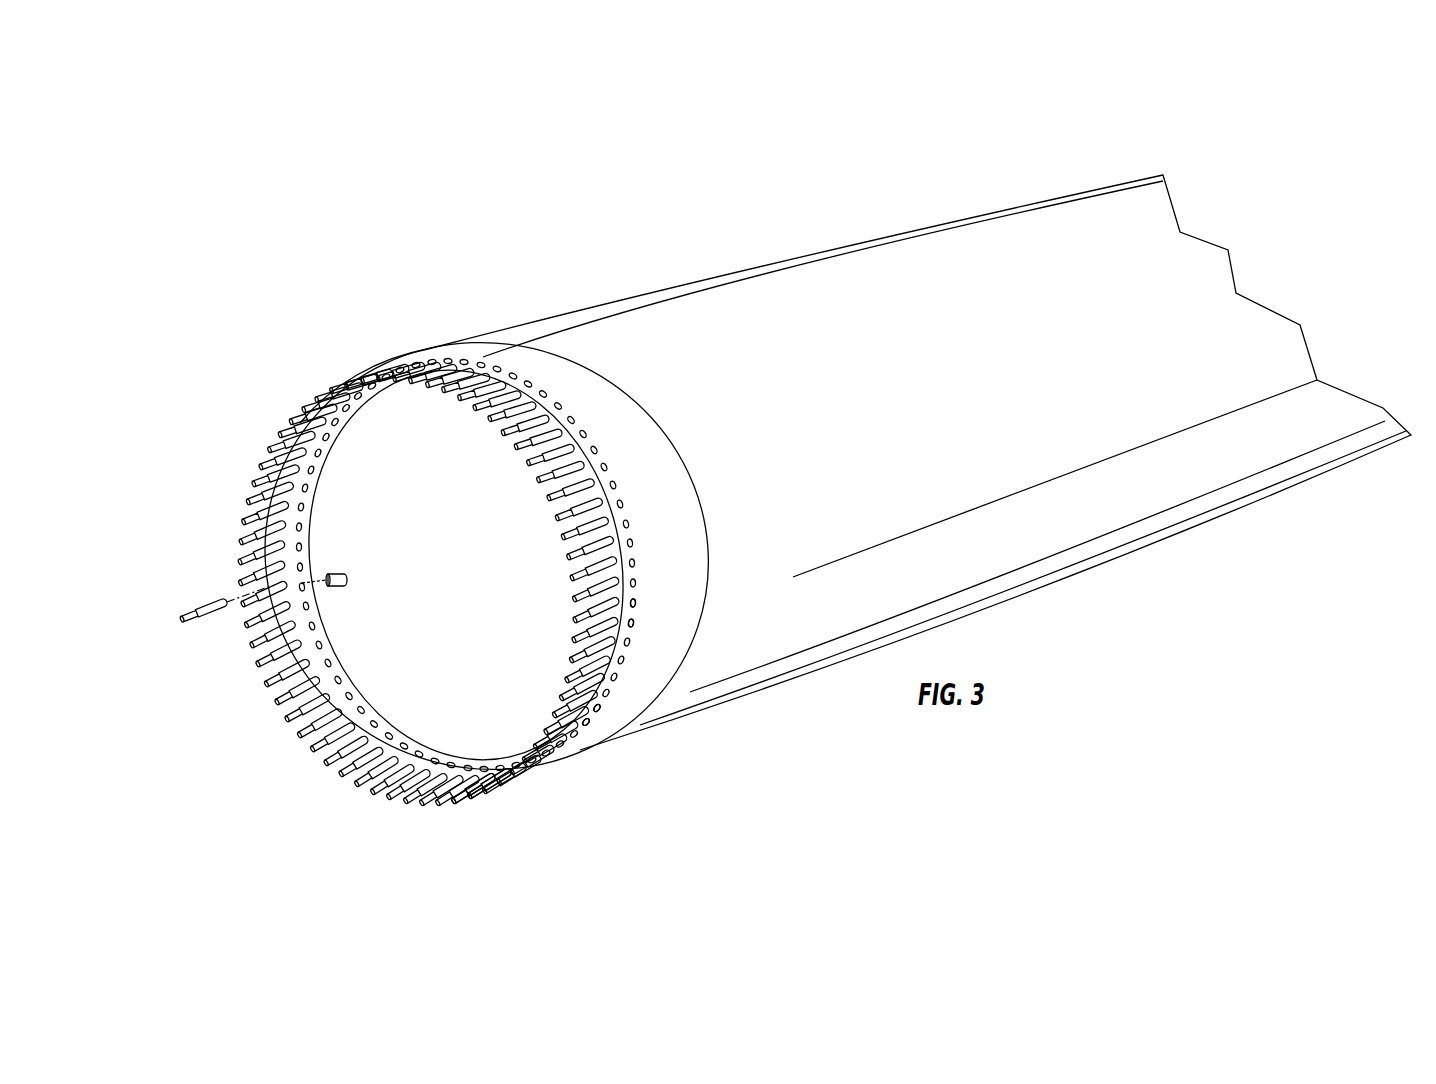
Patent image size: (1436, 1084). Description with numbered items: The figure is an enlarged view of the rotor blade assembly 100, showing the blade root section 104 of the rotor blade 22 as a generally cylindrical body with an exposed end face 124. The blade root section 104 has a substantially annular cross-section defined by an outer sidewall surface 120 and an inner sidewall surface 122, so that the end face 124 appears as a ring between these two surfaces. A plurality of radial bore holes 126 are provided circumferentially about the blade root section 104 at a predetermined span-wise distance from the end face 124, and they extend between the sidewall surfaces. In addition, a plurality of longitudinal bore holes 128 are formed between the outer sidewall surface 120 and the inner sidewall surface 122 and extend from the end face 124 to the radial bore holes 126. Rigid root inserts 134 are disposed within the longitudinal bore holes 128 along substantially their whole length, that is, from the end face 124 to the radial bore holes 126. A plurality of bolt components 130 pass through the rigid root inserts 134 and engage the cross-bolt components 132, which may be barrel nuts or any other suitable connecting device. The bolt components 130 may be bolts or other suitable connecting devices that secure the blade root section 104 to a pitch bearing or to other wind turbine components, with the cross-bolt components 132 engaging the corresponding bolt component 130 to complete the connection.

The rotor blade 22 is at (938, 162).
The rotor blade assembly 100 is at (411, 349).
The blade root section 104 is at (518, 372).
The outer sidewall surface 120 is at (594, 724).
The inner sidewall surface 122 is at (425, 713).
The end face 124 is at (497, 782).
The radial bore holes 126 is at (581, 438).
The longitudinal bore holes 128 is at (284, 572).
The bolt components 130 is at (198, 607).
The cross-bolt components 132 is at (340, 590).
The rigid root inserts 134 is at (634, 619).